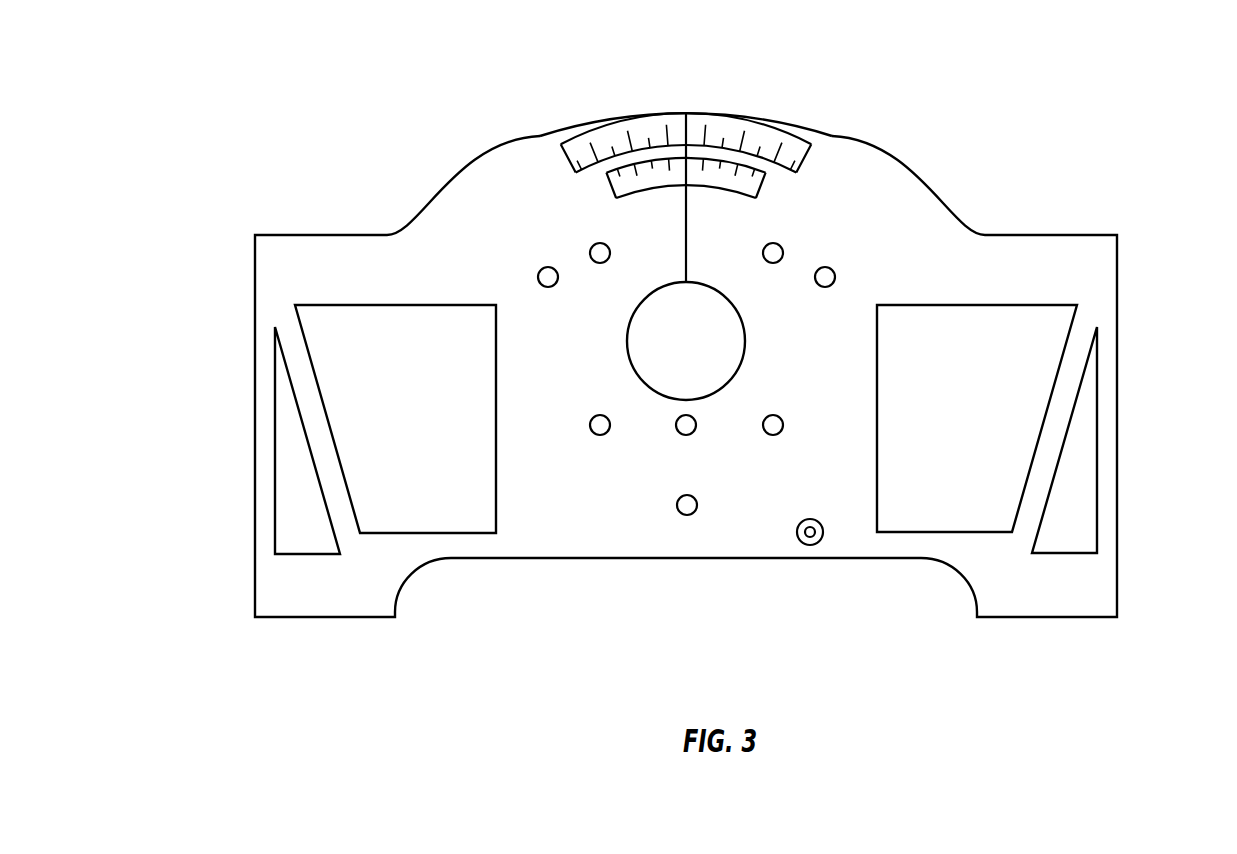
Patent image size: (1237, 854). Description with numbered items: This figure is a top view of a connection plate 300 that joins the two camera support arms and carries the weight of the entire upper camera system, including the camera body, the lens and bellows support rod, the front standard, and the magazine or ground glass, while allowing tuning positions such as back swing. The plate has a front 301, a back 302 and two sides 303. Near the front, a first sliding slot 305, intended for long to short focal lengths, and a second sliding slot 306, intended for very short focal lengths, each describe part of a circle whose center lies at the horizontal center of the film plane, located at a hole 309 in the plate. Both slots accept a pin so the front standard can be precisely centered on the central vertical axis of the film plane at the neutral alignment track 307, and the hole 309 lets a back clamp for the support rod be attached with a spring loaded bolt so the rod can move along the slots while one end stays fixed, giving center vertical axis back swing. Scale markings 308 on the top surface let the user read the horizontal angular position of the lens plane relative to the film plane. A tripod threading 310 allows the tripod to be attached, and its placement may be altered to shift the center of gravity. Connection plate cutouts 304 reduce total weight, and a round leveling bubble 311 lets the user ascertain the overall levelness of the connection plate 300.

The connection plate 300 is at (303, 76).
The front 301 is at (662, 113).
The back 302 is at (703, 559).
The sides 303 is at (255, 305).
The connection plate cutouts 304 is at (730, 355).
The first sliding slot 305 is at (593, 155).
The second sliding slot 306 is at (752, 185).
The neutral alignment track 307 is at (687, 242).
The scale markings 308 is at (810, 158).
The hole 309 is at (683, 497).
The tripod threading 310 is at (689, 436).
The bubble 311 is at (803, 521).